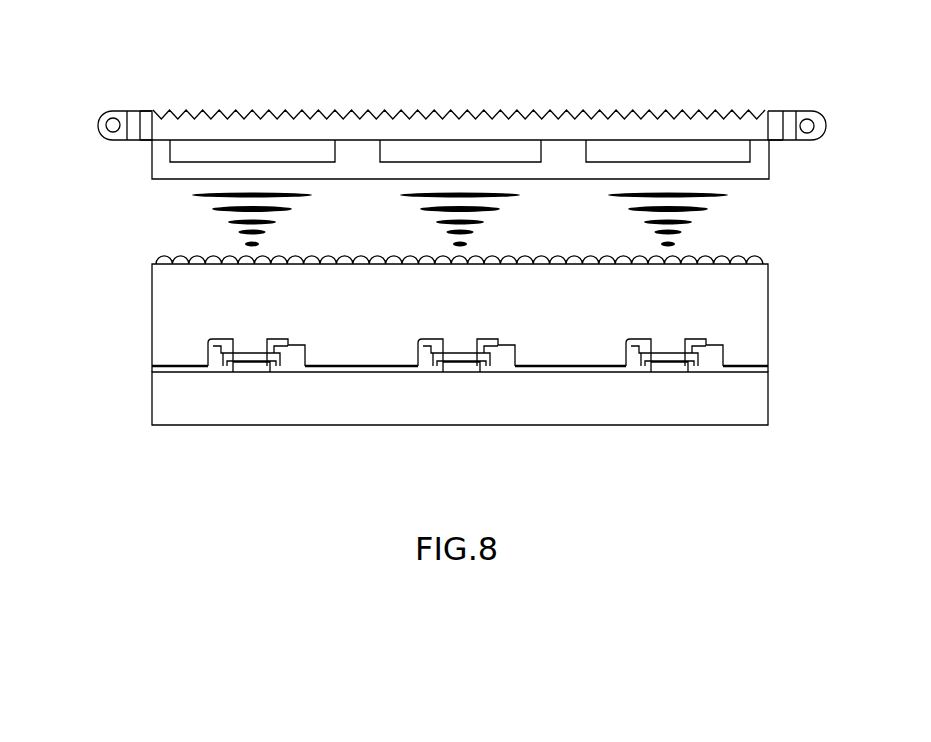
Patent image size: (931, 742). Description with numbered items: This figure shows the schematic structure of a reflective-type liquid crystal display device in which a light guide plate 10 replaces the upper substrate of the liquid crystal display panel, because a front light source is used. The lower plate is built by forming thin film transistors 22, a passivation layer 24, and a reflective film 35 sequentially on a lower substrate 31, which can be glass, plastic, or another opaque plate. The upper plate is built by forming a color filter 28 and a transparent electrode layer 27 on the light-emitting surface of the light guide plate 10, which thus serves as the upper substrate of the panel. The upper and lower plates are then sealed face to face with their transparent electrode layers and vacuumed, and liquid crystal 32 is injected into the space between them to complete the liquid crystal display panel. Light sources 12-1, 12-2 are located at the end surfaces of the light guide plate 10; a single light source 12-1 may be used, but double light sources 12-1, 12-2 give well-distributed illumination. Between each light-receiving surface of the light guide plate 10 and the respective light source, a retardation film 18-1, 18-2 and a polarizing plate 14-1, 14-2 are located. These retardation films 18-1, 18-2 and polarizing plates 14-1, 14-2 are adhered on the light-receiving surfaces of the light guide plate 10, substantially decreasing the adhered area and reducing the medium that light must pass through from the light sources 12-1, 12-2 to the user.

The light guide plate 10 is at (453, 130).
The light source 12-1 is at (108, 122).
The light source 12-2 is at (811, 121).
The polarizing plate 14-1 is at (133, 122).
The polarizing plate 14-2 is at (789, 121).
The retardation film 18-1 is at (145, 133).
The retardation film 18-2 is at (773, 122).
The transparent electrode layer 27 is at (760, 164).
The color filter 28 is at (693, 152).
The liquid crystal 32 is at (202, 217).
The reflective film 35 is at (763, 263).
The passivation layer 24 is at (739, 303).
The thin film transistors 22 is at (713, 348).
The lower substrate 31 is at (739, 392).